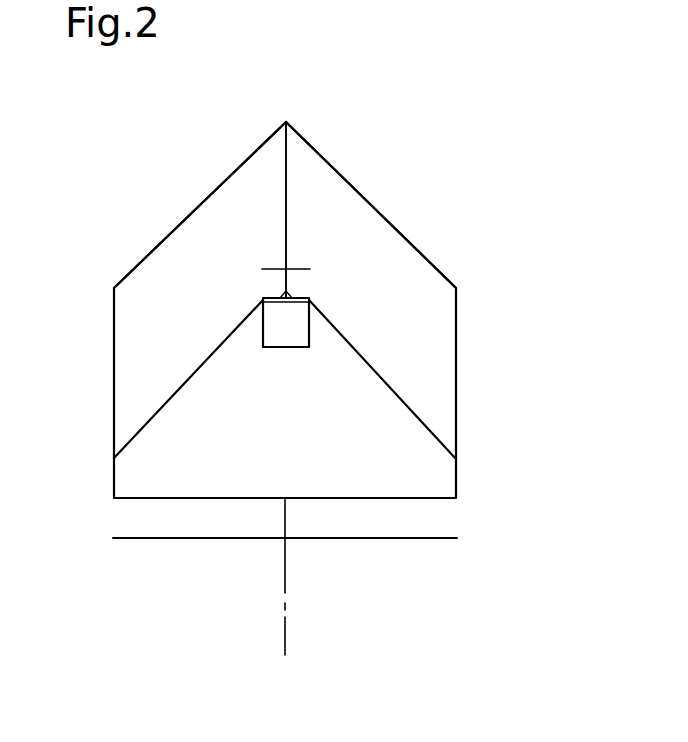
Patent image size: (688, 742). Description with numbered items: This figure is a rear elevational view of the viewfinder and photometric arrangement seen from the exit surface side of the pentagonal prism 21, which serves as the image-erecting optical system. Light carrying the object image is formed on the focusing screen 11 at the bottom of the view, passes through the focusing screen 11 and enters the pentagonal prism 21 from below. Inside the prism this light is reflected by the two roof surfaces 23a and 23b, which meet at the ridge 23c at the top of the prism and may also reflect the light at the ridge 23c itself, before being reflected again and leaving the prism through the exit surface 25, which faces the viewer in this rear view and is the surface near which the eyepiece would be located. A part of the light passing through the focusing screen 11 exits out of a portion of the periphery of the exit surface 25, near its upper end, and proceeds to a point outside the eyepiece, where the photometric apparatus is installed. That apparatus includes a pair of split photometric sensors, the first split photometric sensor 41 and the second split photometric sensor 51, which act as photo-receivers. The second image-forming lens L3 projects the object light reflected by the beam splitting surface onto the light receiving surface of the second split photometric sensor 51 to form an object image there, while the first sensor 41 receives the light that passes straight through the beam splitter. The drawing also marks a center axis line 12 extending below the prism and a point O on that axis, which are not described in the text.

The pentagonal prism 21 is at (128, 223).
The roof surface 23a is at (224, 200).
The roof surface 23b is at (330, 185).
The ridge 23c is at (288, 157).
The exit surface 25 is at (415, 459).
The first split photometric sensor 41 is at (302, 335).
The second split photometric sensor 51 is at (298, 268).
The second image-forming lens L3 is at (300, 294).
The focusing screen 11 is at (435, 538).
The center axis line 12 is at (285, 538).
The origin point O is at (283, 550).